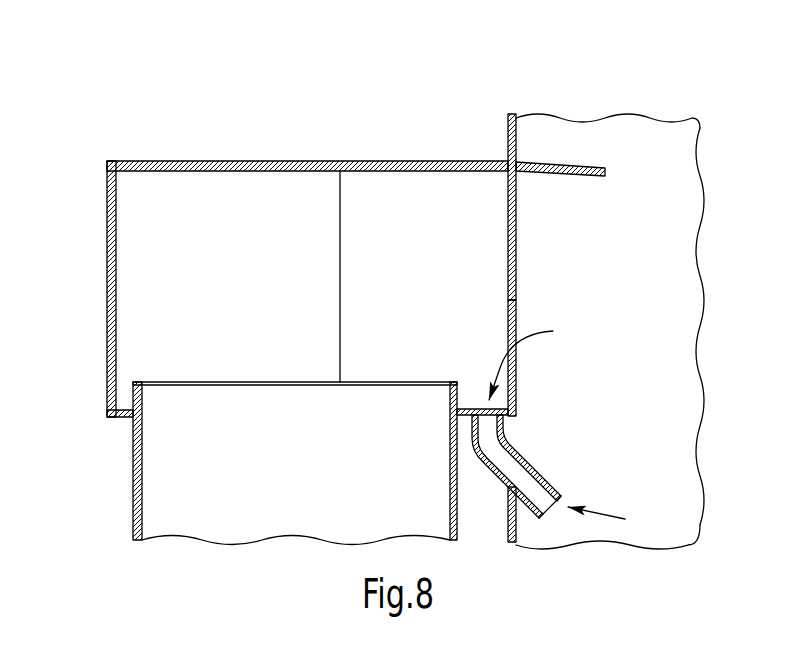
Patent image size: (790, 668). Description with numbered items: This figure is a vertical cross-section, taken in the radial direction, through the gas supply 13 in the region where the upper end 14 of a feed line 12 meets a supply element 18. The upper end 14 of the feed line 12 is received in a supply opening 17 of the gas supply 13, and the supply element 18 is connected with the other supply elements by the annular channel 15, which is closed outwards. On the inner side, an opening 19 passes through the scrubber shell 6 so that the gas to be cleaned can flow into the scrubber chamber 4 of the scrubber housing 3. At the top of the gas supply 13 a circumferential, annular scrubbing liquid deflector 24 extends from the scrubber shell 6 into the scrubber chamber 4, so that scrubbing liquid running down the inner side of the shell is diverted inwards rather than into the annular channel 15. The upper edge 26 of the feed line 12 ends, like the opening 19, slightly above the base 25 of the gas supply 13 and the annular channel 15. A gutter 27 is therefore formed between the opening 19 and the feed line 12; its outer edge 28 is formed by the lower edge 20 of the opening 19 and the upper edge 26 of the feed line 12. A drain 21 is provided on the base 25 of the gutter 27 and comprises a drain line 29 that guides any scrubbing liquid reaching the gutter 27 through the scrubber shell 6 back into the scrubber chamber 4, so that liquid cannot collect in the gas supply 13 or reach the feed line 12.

The scrubber housing 3 is at (490, 122).
The scrubber chamber 4 is at (660, 308).
The scrubber shell 6 is at (516, 434).
The feed line 12 is at (133, 505).
The gas supply 13 is at (255, 128).
The upper end 14 is at (142, 398).
The annular channel 15 is at (438, 237).
The supply opening 17 is at (257, 412).
The supply element 18 is at (108, 210).
The opening 19 is at (512, 280).
The lower edge 20 is at (517, 385).
The drain 21 is at (614, 522).
The scrubbing liquid deflector 24 is at (577, 177).
The base 25 is at (122, 408).
The upper edge 26 is at (453, 382).
The gutter 27 is at (539, 360).
The outer edge 28 is at (457, 398).
The drain line 29 is at (550, 480).